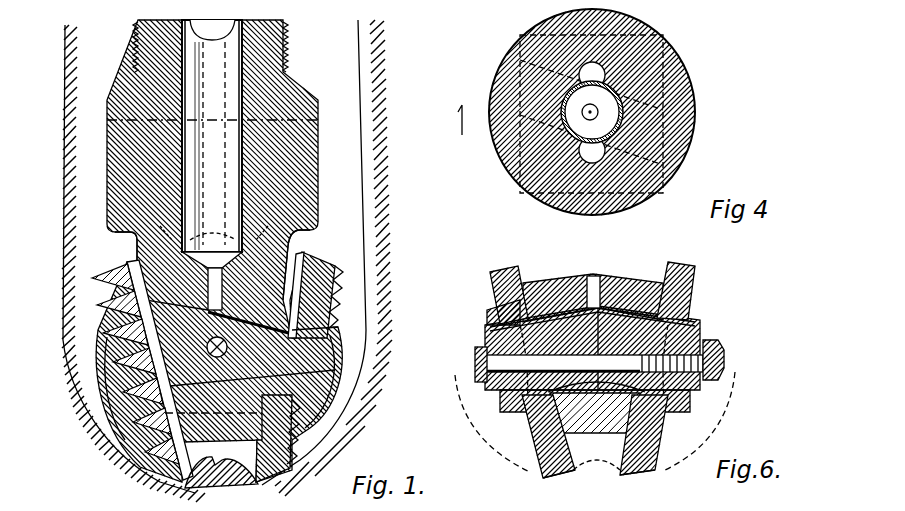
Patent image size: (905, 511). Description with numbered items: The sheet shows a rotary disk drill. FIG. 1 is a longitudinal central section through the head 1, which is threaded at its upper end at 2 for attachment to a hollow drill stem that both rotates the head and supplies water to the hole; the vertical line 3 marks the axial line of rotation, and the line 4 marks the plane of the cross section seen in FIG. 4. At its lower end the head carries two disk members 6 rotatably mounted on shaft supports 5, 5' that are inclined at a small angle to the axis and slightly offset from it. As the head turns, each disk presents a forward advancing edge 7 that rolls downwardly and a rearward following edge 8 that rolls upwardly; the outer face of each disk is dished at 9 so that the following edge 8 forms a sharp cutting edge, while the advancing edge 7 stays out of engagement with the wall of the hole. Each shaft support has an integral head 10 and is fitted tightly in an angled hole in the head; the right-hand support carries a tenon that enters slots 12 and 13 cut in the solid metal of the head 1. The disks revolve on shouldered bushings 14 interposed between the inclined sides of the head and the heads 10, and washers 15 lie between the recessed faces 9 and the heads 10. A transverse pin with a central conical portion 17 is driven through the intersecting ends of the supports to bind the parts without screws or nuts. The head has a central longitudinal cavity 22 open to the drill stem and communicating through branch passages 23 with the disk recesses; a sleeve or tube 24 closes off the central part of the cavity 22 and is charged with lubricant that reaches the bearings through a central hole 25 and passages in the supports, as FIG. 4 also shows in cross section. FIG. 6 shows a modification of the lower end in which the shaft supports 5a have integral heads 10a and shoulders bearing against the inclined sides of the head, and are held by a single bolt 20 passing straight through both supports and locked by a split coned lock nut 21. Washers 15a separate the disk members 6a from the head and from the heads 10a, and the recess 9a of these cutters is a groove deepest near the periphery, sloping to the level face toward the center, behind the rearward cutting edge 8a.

In FIG. 1, the head 1 is at (318, 166).
In FIG. 1, the threaded upper end 2 is at (288, 46).
In FIG. 1, the axial line of rotation 3 is at (220, 492).
In FIG. 1, the section line 4— 4 is at (107, 120).
In FIG. 1, the shaft support 5 is at (137, 370).
In FIG. 1, the shaft support 5' is at (324, 348).
In FIG. 1, the disk member 6 is at (112, 268).
In FIG. 1, the forward advancing edge 7 is at (306, 262).
In FIG. 1, the rearward following edge 8 is at (336, 273).
In FIG. 1, the recess 9 is at (292, 448).
In FIG. 6, the recess 9 is at (630, 392).
In FIG. 1, the integral head 10 is at (105, 346).
In FIG. 1, the slot 12 is at (137, 266).
In FIG. 1, the slot 13 is at (250, 392).
In FIG. 1, the shouldered sleeve or bushing 14 is at (230, 413).
In FIG. 1, the washer 15 is at (324, 320).
In FIG. 1, the central conical portion 17 is at (224, 352).
In FIG. 1, the central longitudinal cavity 22 is at (212, 136).
In FIG. 4, the central longitudinal cavity 22 is at (589, 103).
In FIG. 1, the branch passage 23 is at (165, 230).
In FIG. 4, the branch passage 23 is at (518, 60).
In FIG. 1, the sleeve or tube 24 is at (182, 142).
In FIG. 4, the sleeve or tube 24 is at (625, 112).
In FIG. 1, the central hole 25 is at (222, 290).
In FIG. 6, the central hole 25 is at (595, 276).
In FIG. 6, the integral head 10a is at (485, 333).
In FIG. 6, the shaft support 5a is at (562, 283).
In FIG. 6, the washer 15a is at (522, 285).
In FIG. 6, the bolt 20 is at (512, 386).
In FIG. 6, the split coned lock nut 21 is at (722, 382).
In FIG. 6, the recess 9a is at (537, 458).
In FIG. 6, the cutter tooth circle 8a is at (548, 470).
In FIG. 6, the disk member 6a is at (556, 472).